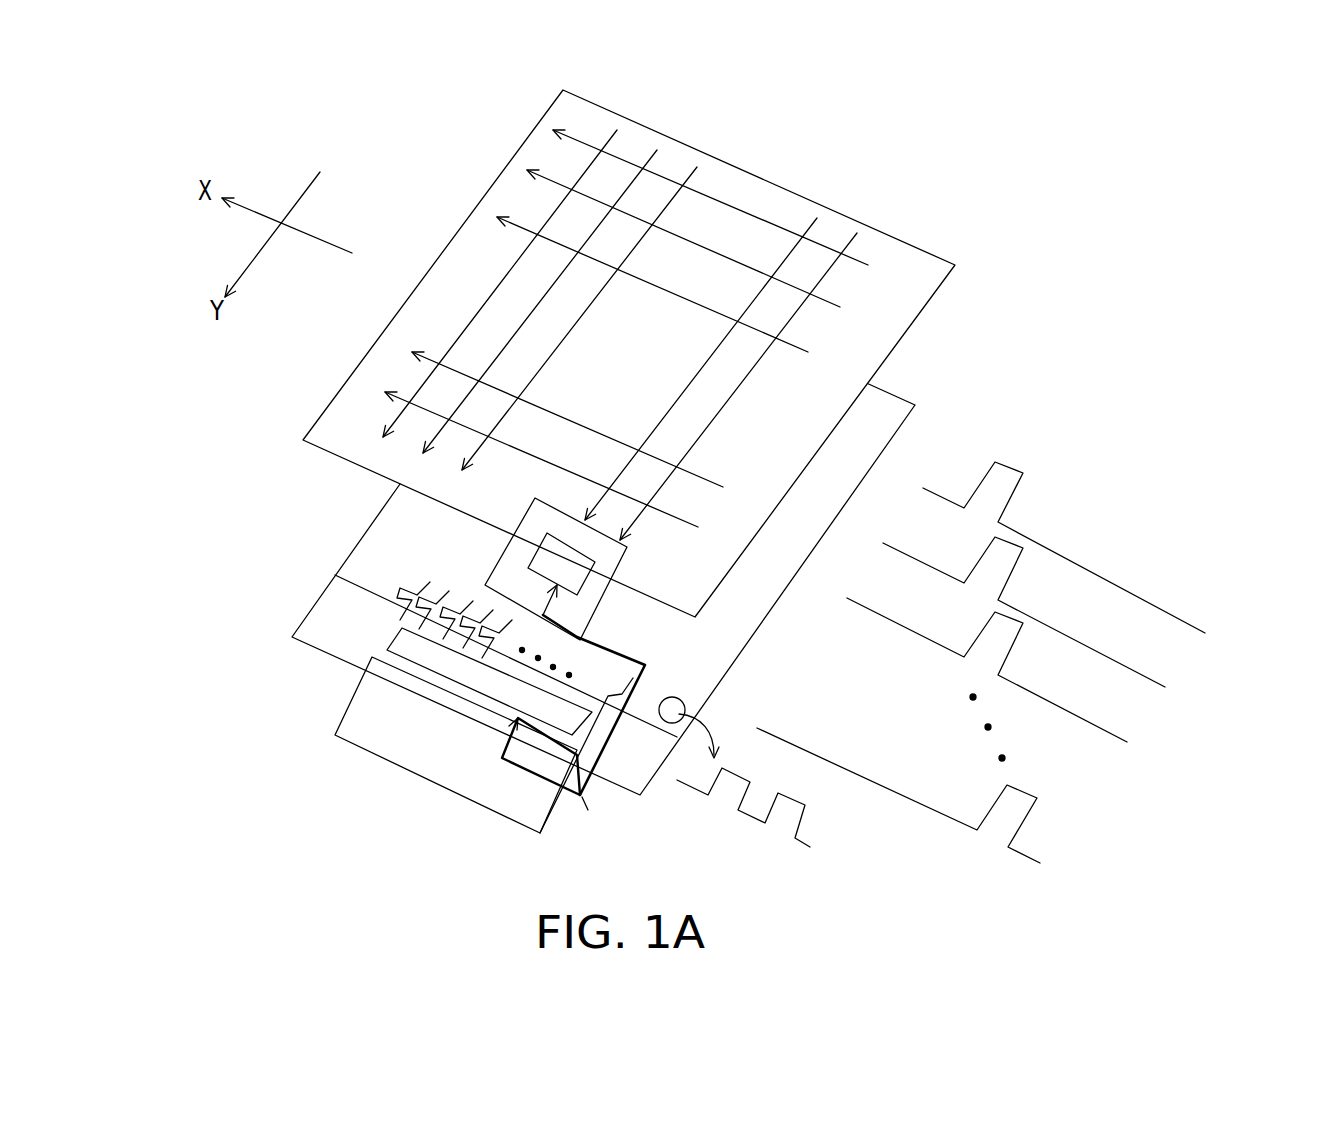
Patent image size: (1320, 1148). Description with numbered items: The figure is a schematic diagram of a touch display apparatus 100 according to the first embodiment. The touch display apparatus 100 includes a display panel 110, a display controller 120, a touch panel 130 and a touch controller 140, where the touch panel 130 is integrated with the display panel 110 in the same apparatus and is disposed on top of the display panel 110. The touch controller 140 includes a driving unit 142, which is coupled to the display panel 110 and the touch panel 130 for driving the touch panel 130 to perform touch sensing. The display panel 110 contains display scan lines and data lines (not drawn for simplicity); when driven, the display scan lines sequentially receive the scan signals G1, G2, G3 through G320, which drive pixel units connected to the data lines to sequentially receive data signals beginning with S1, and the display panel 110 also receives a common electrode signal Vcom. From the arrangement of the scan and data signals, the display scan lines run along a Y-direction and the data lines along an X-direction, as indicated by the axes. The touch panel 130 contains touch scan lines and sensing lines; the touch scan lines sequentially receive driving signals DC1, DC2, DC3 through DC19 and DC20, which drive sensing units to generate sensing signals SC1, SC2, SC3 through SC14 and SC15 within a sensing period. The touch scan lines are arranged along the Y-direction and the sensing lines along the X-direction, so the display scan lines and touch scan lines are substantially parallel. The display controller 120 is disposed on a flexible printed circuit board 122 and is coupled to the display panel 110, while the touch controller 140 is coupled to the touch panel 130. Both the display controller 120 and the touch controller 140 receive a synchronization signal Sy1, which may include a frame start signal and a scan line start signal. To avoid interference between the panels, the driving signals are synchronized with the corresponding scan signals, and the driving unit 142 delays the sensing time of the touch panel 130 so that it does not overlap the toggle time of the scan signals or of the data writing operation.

The touch display apparatus 100 is at (198, 873).
The display panel 110 is at (417, 580).
The display controller 120 is at (393, 635).
The flexible printed circuit board 122 is at (347, 707).
The touch panel 130 is at (503, 163).
The touch controller 140 is at (597, 613).
The driving unit 142 is at (590, 578).
The driving signal DC1 is at (734, 204).
The driving signal DC2 is at (707, 243).
The driving signal DC3 is at (679, 292).
The driving signal DC19 is at (591, 419).
The driving signal DC20 is at (571, 461).
The sensing signal SC1 is at (492, 299).
The sensing signal SC2 is at (535, 319).
The sensing signal SC3 is at (579, 333).
The sensing signal SC14 is at (681, 369).
The sensing signal SC15 is at (738, 401).
The data signal S1 is at (417, 580).
The scan signal G1 is at (1085, 555).
The scan signal G2 is at (1045, 619).
The scan signal G3 is at (1009, 677).
The scan signal G320 is at (931, 795).
The common electrode signal Vcom is at (770, 779).
The synchronization signal Sy1 is at (588, 810).